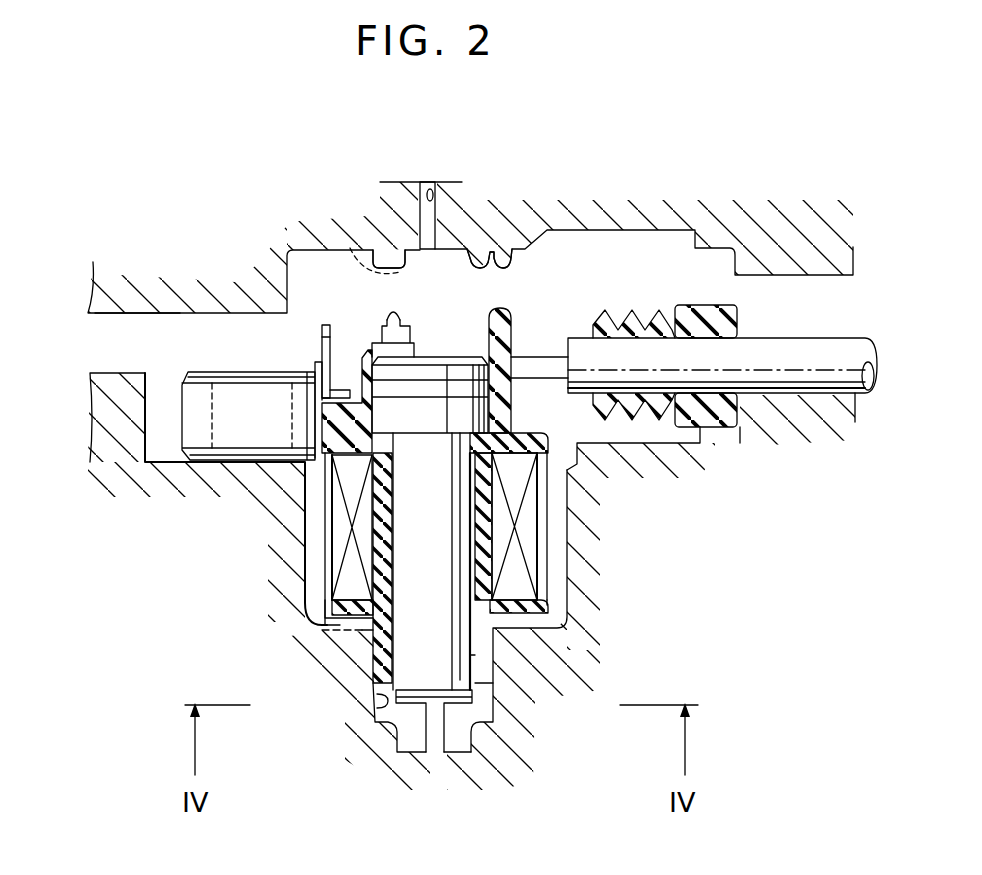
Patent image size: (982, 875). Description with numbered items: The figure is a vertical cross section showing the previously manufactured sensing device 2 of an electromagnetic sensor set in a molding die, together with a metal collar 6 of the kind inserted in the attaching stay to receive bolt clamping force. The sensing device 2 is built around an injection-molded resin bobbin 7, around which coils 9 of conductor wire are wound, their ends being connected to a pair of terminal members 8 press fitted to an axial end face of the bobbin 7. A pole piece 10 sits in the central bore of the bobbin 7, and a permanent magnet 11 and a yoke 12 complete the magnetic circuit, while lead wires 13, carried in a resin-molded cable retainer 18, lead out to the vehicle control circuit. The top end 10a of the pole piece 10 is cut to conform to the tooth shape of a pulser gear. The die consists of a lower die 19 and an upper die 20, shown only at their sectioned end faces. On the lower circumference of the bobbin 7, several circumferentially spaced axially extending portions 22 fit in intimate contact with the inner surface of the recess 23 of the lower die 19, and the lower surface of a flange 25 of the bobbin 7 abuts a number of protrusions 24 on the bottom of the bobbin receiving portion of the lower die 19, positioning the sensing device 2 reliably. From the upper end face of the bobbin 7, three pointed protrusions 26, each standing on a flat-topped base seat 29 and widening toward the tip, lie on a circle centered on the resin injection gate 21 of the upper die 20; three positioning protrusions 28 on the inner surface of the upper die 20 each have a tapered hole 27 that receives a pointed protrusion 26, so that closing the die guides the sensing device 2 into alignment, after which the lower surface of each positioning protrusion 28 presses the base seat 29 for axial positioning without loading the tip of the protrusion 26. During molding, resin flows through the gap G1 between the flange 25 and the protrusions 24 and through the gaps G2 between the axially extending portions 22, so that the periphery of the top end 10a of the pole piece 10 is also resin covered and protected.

The sensing device 2 is at (548, 507).
The metal collar 6 is at (238, 392).
The bobbin 7 is at (520, 543).
The terminal member 8 is at (318, 358).
The coil 9 is at (520, 580).
The pole piece 10 is at (485, 700).
The top end of pole piece 10a is at (440, 728).
The permanent magnet 11 is at (485, 405).
The yoke 12 is at (432, 405).
The lead wire 13 is at (528, 365).
The cable retainer 18 is at (740, 316).
The lower die 19 is at (95, 370).
The upper die 20 is at (110, 316).
The resin injection gate 21 is at (432, 183).
The axially extending portion 22 is at (370, 653).
The recess 23 is at (375, 708).
The protrusion 24 is at (322, 630).
The flange 25 is at (330, 608).
The pointed protrusion 26 is at (396, 314).
The tapered hole 27 is at (350, 248).
The positioning protrusion 28 is at (505, 262).
The base seat 29 is at (387, 336).
The gap G1 is at (535, 624).
The gap G2 is at (483, 657).